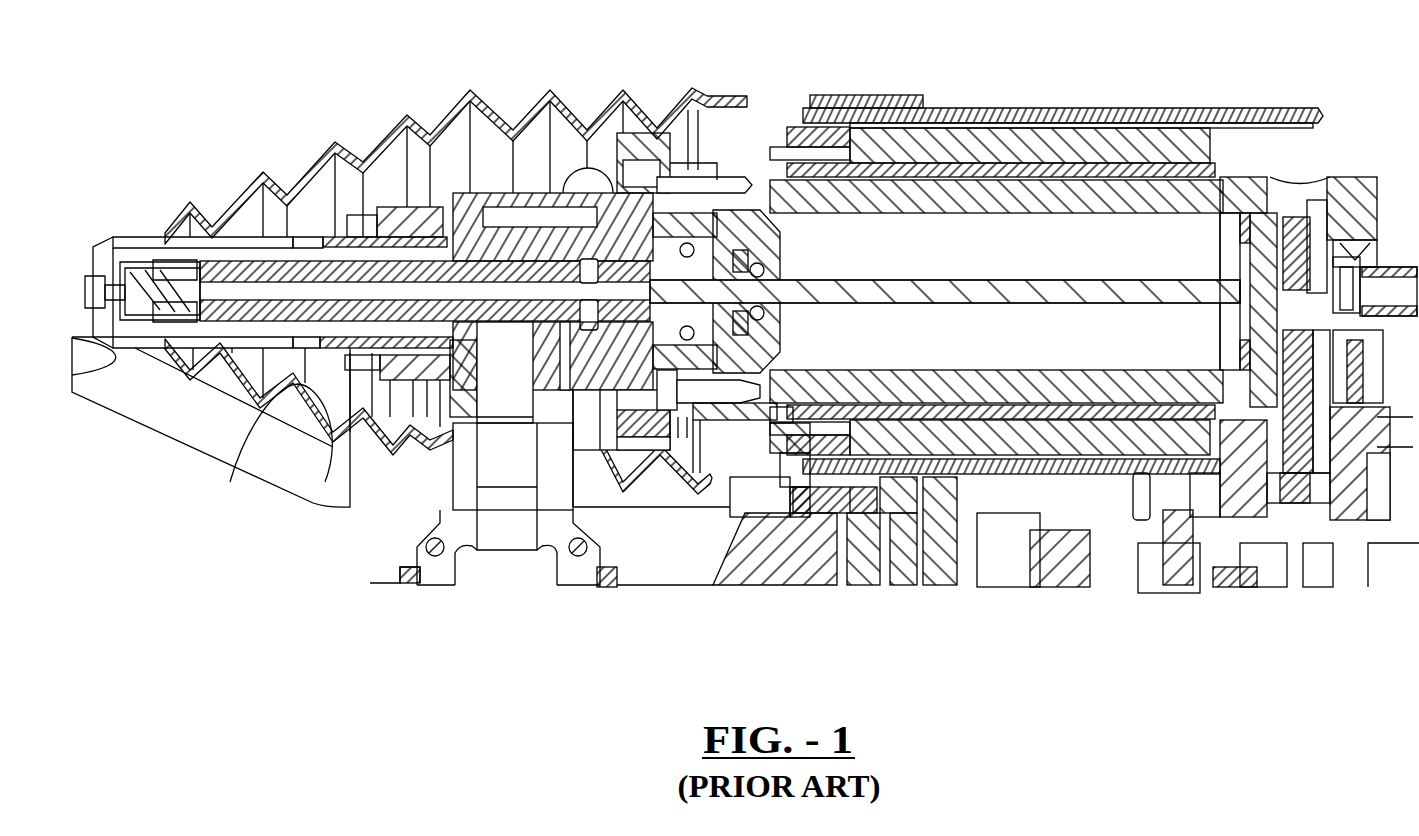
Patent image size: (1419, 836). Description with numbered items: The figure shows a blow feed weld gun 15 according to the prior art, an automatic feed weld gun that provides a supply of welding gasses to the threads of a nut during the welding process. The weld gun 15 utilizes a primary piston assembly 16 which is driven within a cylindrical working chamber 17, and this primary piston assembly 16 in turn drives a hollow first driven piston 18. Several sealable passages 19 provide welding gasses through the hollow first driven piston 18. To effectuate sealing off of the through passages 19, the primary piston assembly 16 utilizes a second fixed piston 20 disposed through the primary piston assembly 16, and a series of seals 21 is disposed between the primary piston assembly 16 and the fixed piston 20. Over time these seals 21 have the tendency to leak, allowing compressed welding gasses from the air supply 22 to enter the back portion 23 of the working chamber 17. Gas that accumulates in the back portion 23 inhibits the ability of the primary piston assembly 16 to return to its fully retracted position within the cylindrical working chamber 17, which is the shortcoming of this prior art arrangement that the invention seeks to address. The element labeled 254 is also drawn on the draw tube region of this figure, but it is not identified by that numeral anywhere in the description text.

The weld gun 15 is at (1007, 100).
The primary piston assembly 16 is at (752, 222).
The cylindrical working chamber 17 is at (1153, 225).
The hollow first driven piston 18 is at (327, 407).
The sealable passages 19 is at (572, 262).
The second fixed piston 20 is at (1187, 287).
The seals 21 is at (760, 278).
The air supply 22 is at (520, 570).
The back portion 23 is at (1053, 253).
The draw tube 254 is at (338, 268).